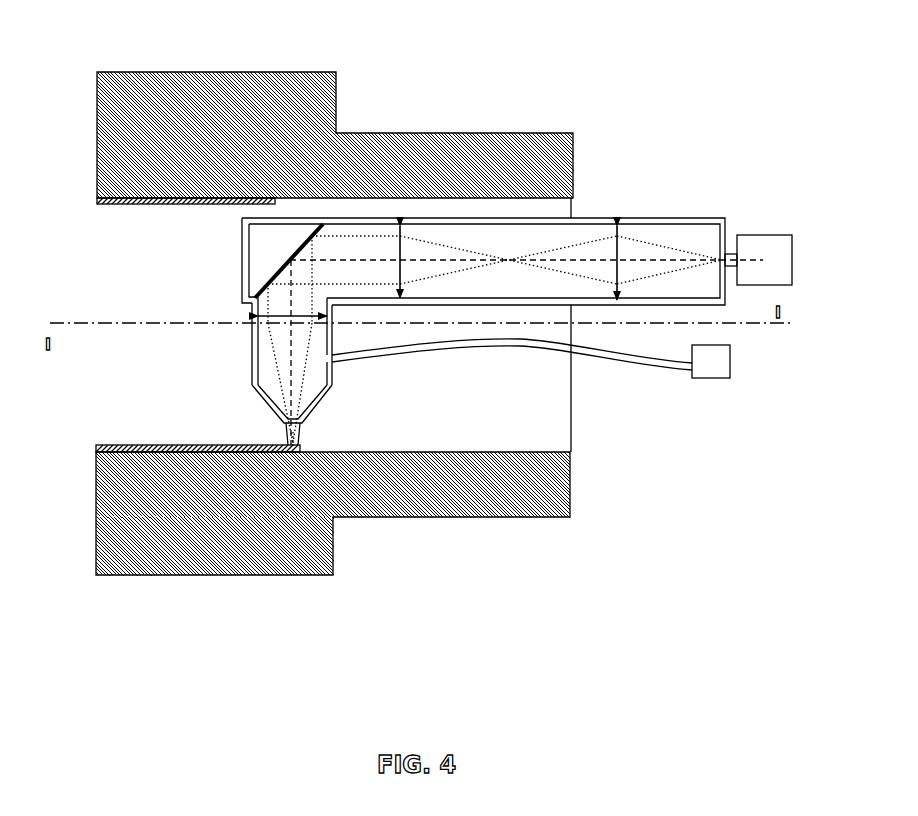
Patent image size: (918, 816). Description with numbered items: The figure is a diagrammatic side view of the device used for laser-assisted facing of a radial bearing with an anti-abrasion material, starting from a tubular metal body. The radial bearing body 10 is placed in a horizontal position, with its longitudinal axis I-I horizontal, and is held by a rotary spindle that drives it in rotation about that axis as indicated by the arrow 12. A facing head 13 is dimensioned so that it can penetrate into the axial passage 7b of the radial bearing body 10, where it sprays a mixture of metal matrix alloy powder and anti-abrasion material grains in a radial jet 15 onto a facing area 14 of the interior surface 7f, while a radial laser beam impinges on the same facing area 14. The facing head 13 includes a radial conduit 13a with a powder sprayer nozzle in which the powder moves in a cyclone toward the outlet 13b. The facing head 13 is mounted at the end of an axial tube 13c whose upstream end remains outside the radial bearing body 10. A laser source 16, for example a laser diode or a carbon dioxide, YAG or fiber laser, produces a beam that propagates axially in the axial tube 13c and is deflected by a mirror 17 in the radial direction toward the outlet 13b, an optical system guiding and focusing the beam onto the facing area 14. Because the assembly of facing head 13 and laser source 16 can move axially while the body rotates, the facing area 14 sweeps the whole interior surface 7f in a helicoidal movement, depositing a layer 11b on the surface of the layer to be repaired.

The radial bearing body 10 is at (354, 92).
The axial passage 7b is at (123, 279).
The interior surface 7f is at (528, 452).
The layer 11b is at (128, 445).
The arrow 12 is at (108, 345).
The facing head 13 is at (320, 377).
The radial conduit 13a is at (268, 344).
The outlet 13b is at (281, 404).
The axial tube 13c is at (598, 218).
The facing area 14 is at (301, 440).
The radial jet 15 is at (290, 437).
The laser source 16 is at (760, 240).
The mirror 17 is at (285, 262).